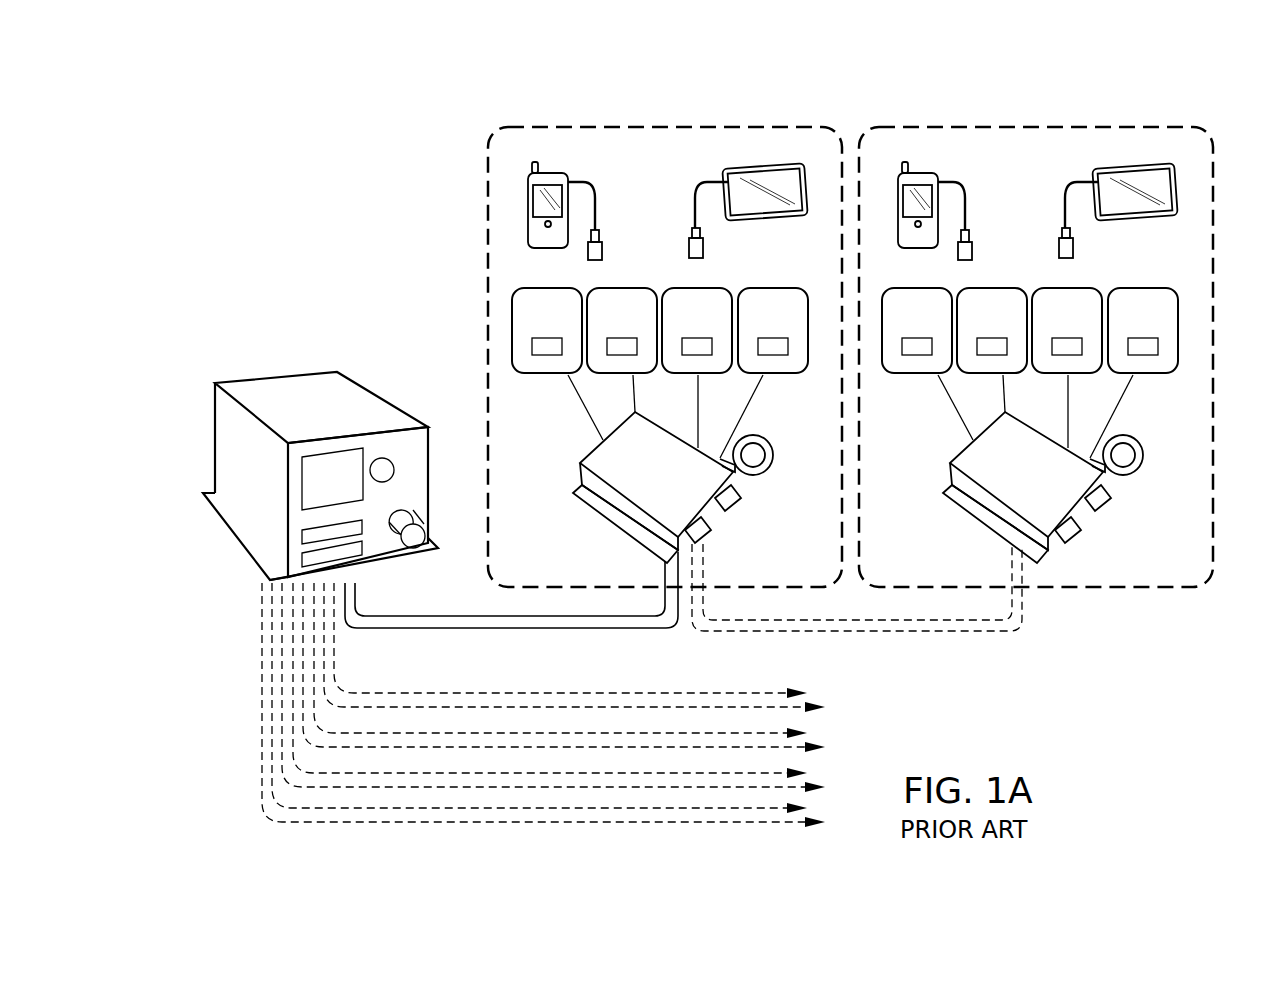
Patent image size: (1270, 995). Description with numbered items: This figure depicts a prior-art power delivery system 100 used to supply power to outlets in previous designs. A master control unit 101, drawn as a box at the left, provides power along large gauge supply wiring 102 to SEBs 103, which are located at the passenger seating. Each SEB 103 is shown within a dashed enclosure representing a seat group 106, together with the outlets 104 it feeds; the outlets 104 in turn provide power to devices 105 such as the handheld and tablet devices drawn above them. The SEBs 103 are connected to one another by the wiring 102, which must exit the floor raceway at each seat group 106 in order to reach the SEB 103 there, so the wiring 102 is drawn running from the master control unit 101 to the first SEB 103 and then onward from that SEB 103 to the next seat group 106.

The power system 100 is at (314, 186).
The master control unit 101 is at (278, 373).
The large gauge supply wiring 102 is at (892, 631).
The SEB 103 is at (1040, 503).
The outlet 104 is at (512, 330).
The device 105 is at (528, 190).
The seat group 106 is at (752, 127).